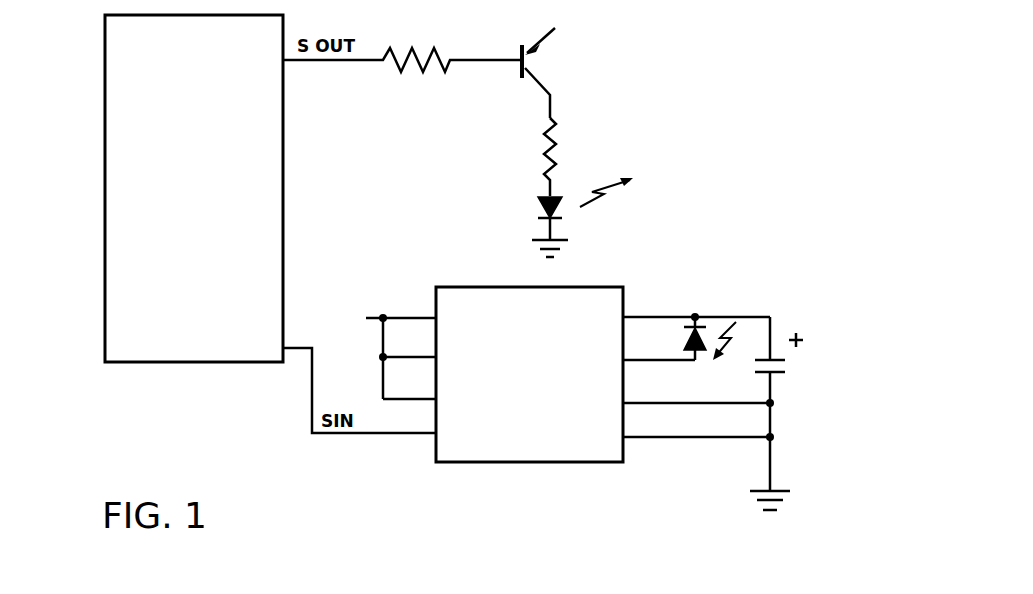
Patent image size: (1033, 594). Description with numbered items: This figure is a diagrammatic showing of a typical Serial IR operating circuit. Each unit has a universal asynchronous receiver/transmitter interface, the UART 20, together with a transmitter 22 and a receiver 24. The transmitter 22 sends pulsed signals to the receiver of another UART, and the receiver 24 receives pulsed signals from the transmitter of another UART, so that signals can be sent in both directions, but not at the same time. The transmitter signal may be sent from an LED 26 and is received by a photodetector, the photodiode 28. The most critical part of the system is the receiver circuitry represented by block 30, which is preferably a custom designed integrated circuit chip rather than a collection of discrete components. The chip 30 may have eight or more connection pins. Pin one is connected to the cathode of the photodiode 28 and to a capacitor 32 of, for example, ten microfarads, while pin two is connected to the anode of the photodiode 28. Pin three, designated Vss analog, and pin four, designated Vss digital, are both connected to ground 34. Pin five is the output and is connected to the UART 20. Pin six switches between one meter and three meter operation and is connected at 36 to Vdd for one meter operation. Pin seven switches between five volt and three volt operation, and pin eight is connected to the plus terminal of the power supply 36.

The UART interface 20 is at (105, 180).
The transmitter 22 is at (545, 88).
The receiver 24 is at (612, 277).
The LED 26 is at (535, 210).
The photodiode 28 is at (700, 352).
The receiver circuitry chip 30 is at (472, 287).
The capacitor 32 is at (787, 365).
The ground 34 is at (787, 497).
The power supply 36 is at (378, 318).